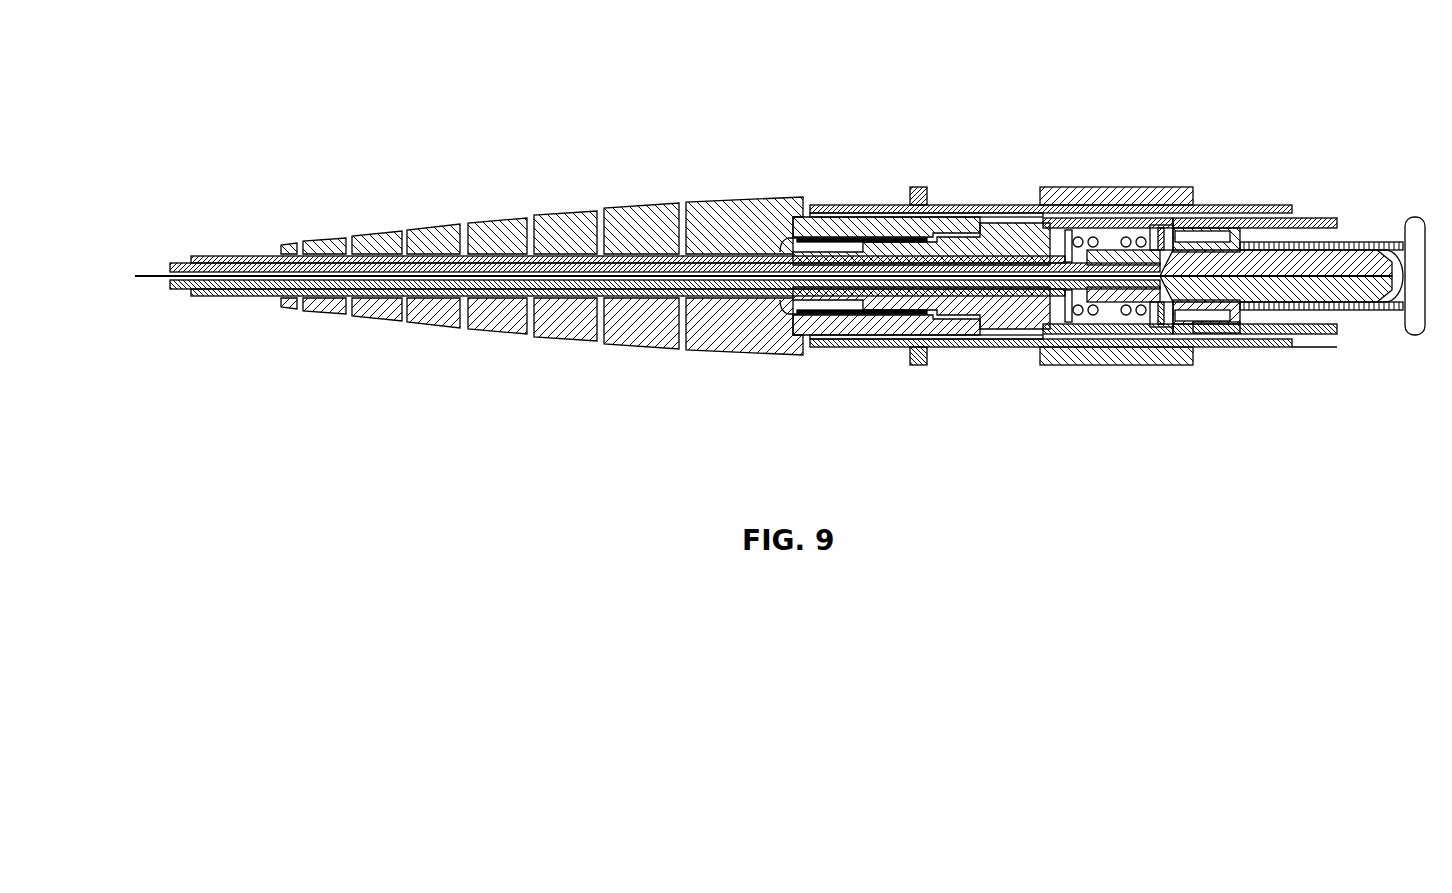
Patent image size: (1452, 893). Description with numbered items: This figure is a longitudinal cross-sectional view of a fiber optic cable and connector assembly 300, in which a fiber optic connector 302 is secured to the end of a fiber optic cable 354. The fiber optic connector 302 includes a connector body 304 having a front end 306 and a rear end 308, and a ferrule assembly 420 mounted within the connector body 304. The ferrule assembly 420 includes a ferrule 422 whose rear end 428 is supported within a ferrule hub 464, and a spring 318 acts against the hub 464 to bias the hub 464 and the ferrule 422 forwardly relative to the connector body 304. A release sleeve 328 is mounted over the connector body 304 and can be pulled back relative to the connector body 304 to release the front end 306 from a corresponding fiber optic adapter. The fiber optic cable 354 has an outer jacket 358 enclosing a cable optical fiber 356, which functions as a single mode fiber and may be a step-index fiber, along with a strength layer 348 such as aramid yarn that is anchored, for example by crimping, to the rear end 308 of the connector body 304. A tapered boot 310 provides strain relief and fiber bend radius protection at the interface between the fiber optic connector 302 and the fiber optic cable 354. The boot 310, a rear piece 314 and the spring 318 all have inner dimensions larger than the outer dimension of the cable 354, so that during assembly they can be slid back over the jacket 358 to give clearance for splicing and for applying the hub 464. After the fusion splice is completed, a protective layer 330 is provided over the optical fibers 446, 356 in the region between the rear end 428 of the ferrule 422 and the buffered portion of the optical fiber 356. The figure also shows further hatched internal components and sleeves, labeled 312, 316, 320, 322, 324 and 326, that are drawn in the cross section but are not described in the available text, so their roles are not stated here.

The fiber optic cable and connector assembly 300 is at (230, 128).
The fiber optic connector 302 is at (855, 347).
The connector body 304 is at (1332, 338).
The front end 306 is at (1340, 222).
The rear end 308 is at (795, 203).
The tapered boot 310 is at (567, 333).
The housing block 312 is at (1205, 208).
The rear piece 314 is at (993, 220).
The inner sleeve 316 is at (780, 250).
The spring 318 is at (1065, 243).
The retainer 320 is at (1152, 235).
The collar 322 is at (1243, 337).
The barrel 324 is at (1248, 222).
The outer sleeve 326 is at (1113, 218).
The release sleeve 328 is at (980, 347).
The protective layer 330 is at (1110, 305).
The strength layer 348 is at (1092, 242).
The fiber optic cable 354 is at (247, 296).
The cable optical fiber 356 is at (158, 278).
The outer jacket 358 is at (225, 257).
The ferrule assembly 420 is at (1302, 265).
The ferrule 422 is at (1320, 290).
The rear end 428 is at (1158, 248).
The optical fiber 446 is at (1153, 310).
The ferrule hub 464 is at (1197, 333).